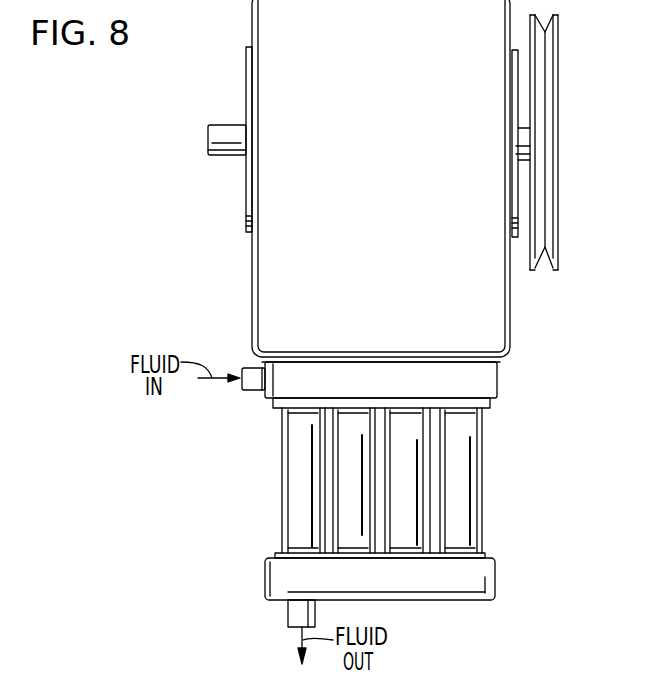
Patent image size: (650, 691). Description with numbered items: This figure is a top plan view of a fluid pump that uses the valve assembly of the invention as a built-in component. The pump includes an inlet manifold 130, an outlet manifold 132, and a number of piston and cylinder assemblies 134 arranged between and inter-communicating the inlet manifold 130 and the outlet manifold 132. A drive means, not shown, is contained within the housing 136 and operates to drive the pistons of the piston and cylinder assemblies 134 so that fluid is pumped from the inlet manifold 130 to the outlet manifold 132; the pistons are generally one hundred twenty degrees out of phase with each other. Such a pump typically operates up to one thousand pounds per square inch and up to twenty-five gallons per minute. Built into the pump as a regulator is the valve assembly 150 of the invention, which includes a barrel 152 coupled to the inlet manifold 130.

The inlet manifold 130 is at (497, 382).
The outlet manifold 132 is at (495, 575).
The piston and cylinder assemblies 134 is at (392, 518).
The housing 136 is at (381, 80).
The valve assembly 150 is at (494, 502).
The barrel 152 is at (484, 462).